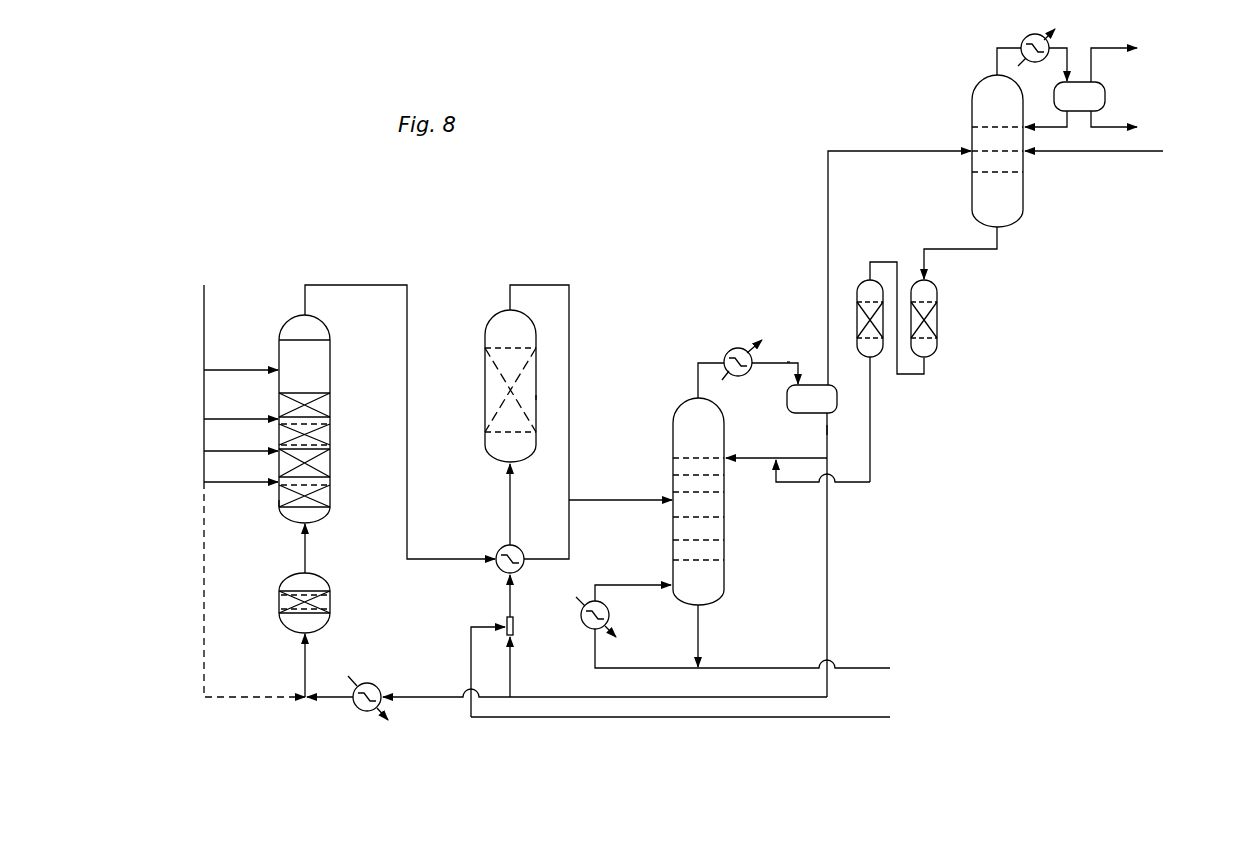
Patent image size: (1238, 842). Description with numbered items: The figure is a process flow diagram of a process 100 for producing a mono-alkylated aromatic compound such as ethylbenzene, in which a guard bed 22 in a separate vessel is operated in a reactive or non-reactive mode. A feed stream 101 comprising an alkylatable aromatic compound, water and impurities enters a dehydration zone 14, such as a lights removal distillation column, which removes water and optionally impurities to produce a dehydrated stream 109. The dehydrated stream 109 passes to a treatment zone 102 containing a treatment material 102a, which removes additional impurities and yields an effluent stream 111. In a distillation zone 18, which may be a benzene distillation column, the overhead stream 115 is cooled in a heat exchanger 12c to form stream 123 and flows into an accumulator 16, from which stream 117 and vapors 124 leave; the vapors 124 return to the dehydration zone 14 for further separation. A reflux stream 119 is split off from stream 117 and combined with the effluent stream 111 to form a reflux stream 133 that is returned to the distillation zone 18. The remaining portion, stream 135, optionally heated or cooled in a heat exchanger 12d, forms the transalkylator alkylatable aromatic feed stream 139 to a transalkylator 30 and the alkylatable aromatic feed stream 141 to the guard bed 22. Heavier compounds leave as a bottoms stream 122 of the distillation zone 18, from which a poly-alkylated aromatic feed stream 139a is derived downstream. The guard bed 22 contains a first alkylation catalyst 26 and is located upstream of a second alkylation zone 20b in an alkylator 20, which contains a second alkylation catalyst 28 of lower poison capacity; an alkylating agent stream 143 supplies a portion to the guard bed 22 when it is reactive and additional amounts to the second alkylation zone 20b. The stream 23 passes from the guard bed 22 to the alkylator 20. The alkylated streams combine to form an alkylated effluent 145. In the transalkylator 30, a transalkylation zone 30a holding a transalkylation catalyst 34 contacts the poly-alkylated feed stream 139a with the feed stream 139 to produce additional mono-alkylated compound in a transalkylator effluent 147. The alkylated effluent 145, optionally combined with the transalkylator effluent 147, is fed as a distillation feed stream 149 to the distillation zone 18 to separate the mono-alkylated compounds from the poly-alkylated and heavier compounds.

The process 100 is at (165, 720).
The dehydration zone 14 is at (972, 103).
The feed stream 101 is at (1135, 151).
The vapors 124 is at (828, 180).
The treatment zone 102 is at (857, 285).
The treatment material 102a is at (937, 330).
The dehydrated stream 109 is at (950, 249).
The effluent stream 111 is at (870, 400).
The accumulator 16 is at (812, 399).
The heat exchanger 12c is at (731, 350).
The stream 123 is at (787, 362).
The overhead stream 115 is at (698, 380).
The stream 117 is at (828, 430).
The reflux stream 119 is at (800, 458).
The reflux stream 133 is at (750, 460).
The stream 135 is at (828, 580).
The distillation zone 18 is at (724, 575).
The bottoms stream 122 is at (862, 668).
The transalkylator alkylatable aromatic feed stream 139 is at (510, 660).
The poly-alkylated aromatic feed stream 139a is at (880, 717).
The distillation feed stream 149 is at (585, 500).
The transalkylator effluent 147 is at (569, 312).
The alkylated effluent 145 is at (330, 284).
The transalkylator 30 is at (500, 310).
The transalkylation catalyst 34 is at (485, 393).
The transalkylation zone 30a is at (536, 395).
The alkylator 20 is at (280, 325).
The second alkylation catalyst 28 is at (330, 492).
The second alkylation zone 20b is at (279, 500).
The alkylating agent stream 143 is at (204, 298).
The vapor line 23 is at (305, 552).
The guard bed 22 is at (326, 577).
The first alkylation catalyst 26 is at (330, 600).
The alkylatable aromatic feed stream 141 is at (305, 665).
The heat exchanger 12d is at (365, 685).